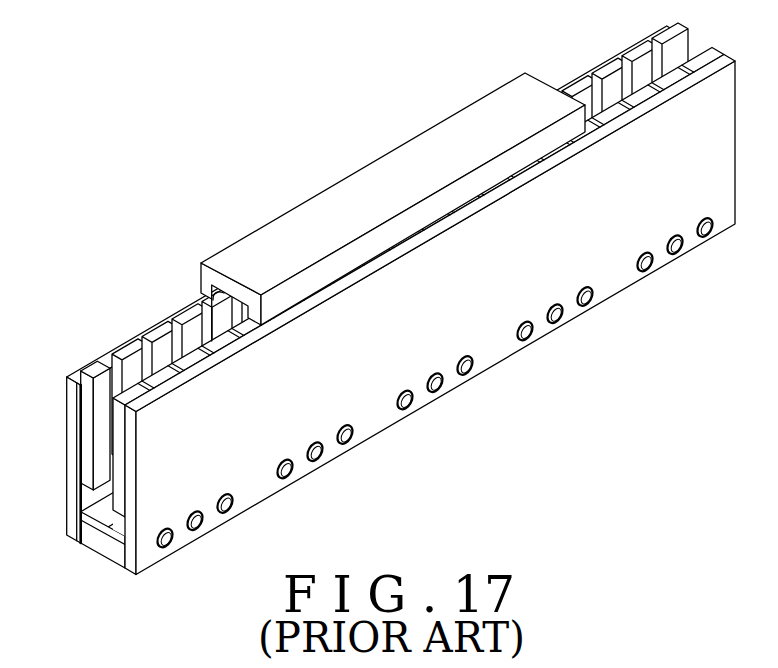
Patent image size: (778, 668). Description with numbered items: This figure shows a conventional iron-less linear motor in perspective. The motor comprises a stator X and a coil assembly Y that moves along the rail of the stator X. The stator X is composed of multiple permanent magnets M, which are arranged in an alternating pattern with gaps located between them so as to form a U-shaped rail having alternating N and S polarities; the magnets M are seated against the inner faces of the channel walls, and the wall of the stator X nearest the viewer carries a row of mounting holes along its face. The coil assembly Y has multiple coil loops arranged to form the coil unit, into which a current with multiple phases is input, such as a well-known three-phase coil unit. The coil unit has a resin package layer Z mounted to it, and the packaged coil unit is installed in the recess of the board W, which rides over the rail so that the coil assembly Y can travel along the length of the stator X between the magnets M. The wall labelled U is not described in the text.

The back wall (yoke) of stator channel U is at (72, 397).
The permanent magnets M is at (86, 444).
The resin package layer Z is at (232, 323).
The board W is at (210, 277).
The coil assembly Y is at (332, 198).
The stator X is at (494, 346).